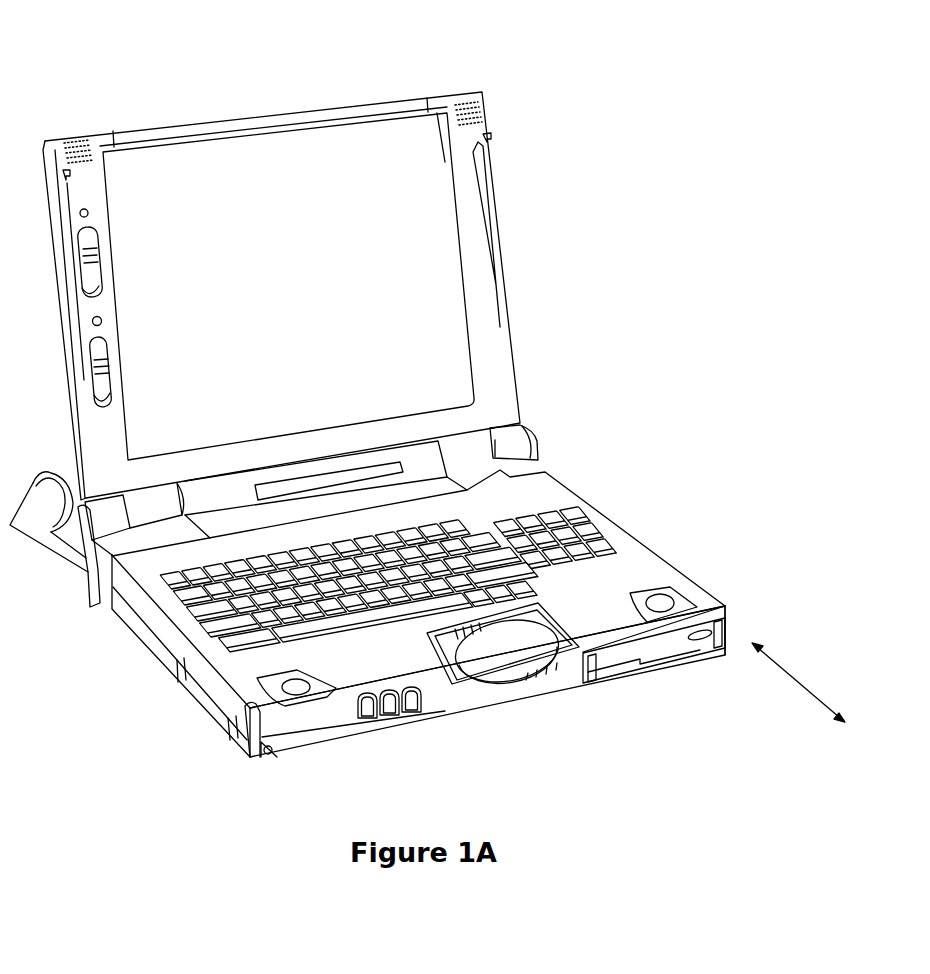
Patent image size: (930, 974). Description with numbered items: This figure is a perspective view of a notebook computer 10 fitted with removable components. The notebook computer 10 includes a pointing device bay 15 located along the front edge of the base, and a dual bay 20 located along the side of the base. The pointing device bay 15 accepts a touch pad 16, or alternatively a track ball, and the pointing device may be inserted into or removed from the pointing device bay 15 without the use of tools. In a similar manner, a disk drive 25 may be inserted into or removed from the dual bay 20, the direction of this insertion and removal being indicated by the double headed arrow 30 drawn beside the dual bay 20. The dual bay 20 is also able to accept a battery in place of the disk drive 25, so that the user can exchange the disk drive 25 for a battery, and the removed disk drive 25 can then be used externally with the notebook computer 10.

The notebook computer 10 is at (204, 96).
The pointing device bay 15 is at (459, 692).
The touch pad 16 is at (517, 702).
The dual bay 20 is at (725, 607).
The disk drive 25 is at (660, 658).
The double headed arrow 30 is at (828, 715).